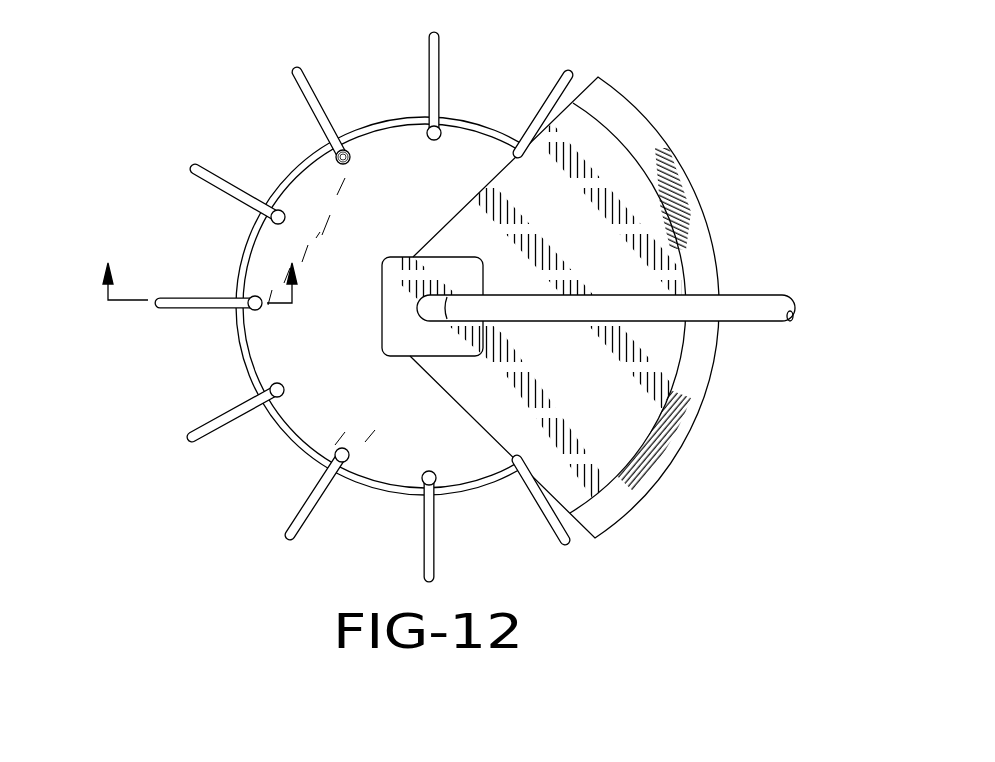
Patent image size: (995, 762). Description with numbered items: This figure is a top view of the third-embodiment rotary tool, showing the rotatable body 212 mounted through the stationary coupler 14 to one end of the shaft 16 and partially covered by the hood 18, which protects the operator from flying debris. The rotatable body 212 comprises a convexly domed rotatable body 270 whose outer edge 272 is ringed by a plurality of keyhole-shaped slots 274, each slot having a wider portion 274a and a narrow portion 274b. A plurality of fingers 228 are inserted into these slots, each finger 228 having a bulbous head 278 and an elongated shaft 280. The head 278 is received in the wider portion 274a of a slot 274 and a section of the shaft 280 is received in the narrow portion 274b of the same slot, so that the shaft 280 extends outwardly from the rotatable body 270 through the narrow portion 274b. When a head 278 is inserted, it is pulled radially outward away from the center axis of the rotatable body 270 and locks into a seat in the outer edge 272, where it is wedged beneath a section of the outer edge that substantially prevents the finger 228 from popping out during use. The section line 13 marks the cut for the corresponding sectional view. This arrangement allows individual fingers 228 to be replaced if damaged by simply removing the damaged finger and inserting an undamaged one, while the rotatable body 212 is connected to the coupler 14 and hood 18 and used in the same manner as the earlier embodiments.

The rotatable body 212 is at (464, 313).
The outer edge 272 is at (372, 122).
The convexly domed rotatable body 270 is at (478, 151).
The finger 228 is at (271, 294).
The elongated shaft 280 is at (312, 112).
The bulbous head 278 is at (286, 221).
The keyhole-shaped slot 274 is at (325, 166).
The wider portion 274a is at (352, 155).
The narrow portion 274b is at (337, 154).
The hood 18 is at (625, 149).
The stationary coupler 14 is at (385, 328).
The shaft 16 is at (751, 294).
The section line 13- 13 is at (203, 269).